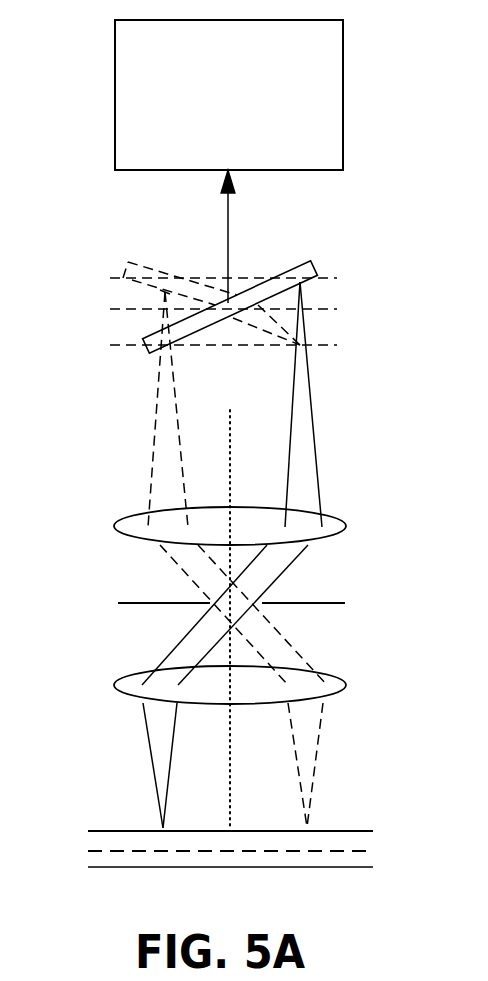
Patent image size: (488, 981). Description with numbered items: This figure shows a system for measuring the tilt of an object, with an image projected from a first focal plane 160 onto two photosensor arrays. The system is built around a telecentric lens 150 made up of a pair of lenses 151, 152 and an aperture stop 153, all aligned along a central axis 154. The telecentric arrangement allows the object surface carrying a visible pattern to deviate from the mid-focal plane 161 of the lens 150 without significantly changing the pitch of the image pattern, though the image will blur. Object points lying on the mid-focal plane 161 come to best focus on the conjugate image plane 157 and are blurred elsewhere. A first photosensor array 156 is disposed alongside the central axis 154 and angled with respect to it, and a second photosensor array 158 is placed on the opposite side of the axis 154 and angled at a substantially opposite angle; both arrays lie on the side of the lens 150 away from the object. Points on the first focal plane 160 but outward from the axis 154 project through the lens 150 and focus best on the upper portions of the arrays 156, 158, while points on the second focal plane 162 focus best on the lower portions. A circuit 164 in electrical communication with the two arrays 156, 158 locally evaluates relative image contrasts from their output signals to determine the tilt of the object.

The telecentric lens 150 is at (385, 452).
The lens 151 is at (346, 526).
The lens 152 is at (346, 685).
The aperture stop 153 is at (328, 602).
The central axis 154 is at (232, 450).
The first photosensor array 156 is at (317, 270).
The image plane 157 is at (310, 308).
The second photosensor array 158 is at (313, 333).
The first focal plane 160 is at (347, 830).
The mid-focal plane 161 is at (102, 848).
The second focal plane 162 is at (343, 865).
The circuit 164 is at (208, 137).